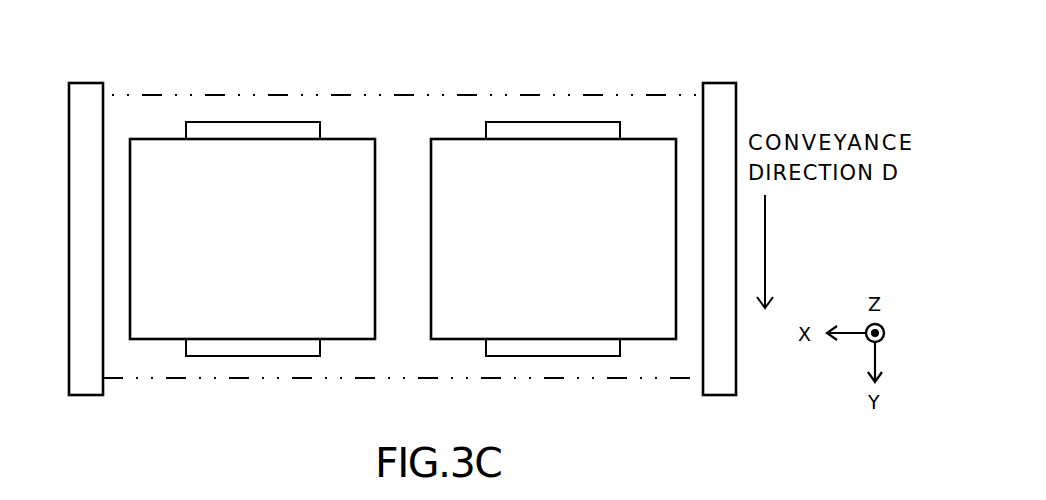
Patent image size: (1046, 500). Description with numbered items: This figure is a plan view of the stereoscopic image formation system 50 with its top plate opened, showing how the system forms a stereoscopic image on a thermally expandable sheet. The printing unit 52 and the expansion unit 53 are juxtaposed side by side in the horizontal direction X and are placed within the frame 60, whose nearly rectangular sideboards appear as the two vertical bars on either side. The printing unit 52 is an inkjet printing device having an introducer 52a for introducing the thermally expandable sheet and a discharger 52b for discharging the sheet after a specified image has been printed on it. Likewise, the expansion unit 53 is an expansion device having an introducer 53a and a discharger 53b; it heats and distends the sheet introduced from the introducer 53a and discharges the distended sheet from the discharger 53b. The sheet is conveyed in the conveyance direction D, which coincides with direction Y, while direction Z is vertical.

The stereoscopic image formation system 50 is at (768, 57).
The printing unit 52 is at (459, 139).
The introducer 52a is at (526, 122).
The discharger 52b is at (526, 356).
The expansion unit 53 is at (154, 139).
The introducer 53a is at (222, 122).
The discharger 53b is at (220, 356).
The frame 60 is at (738, 102).